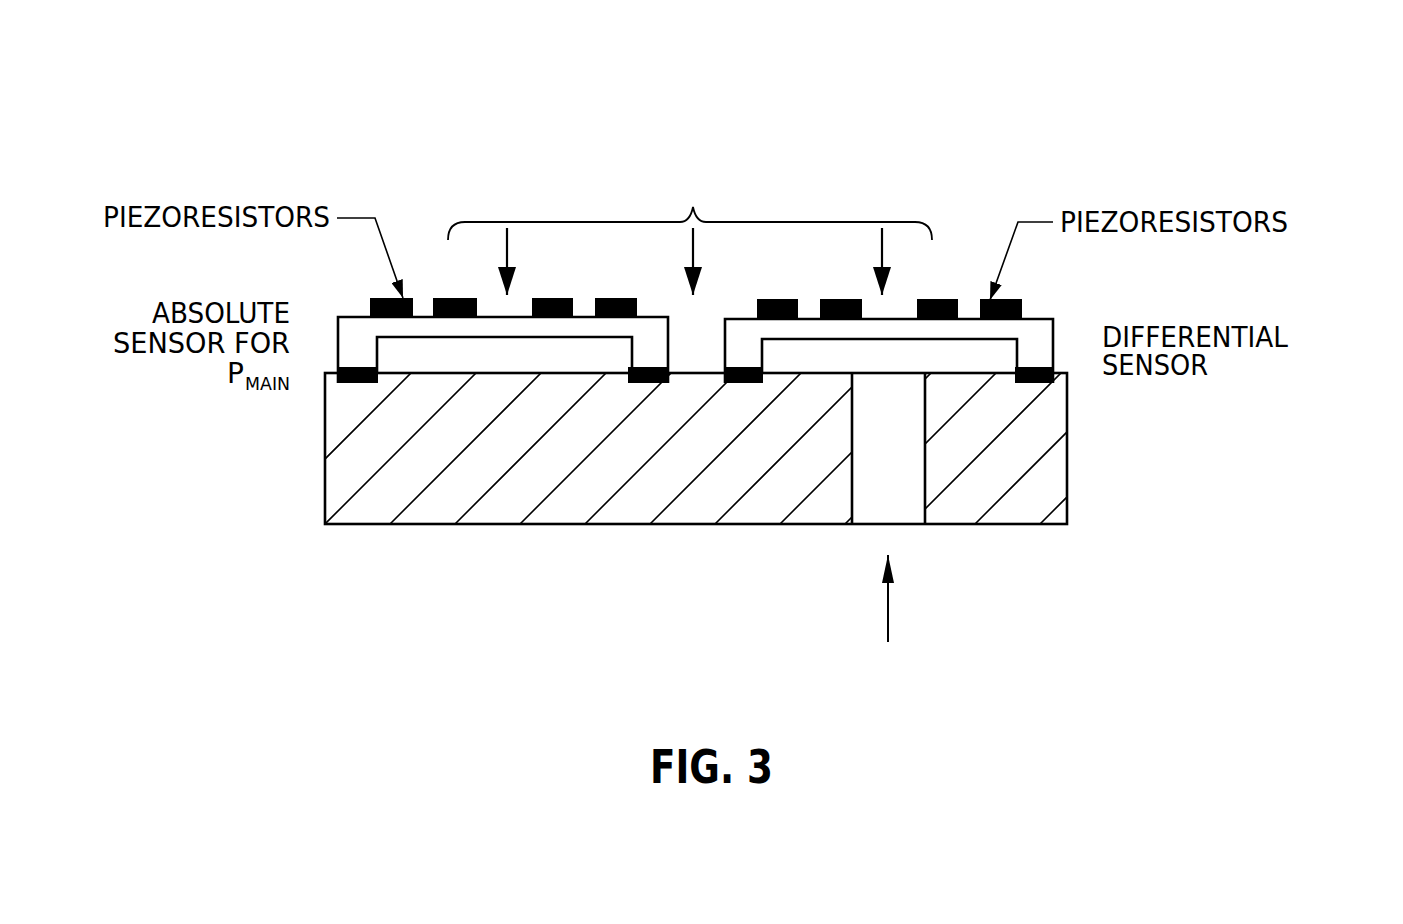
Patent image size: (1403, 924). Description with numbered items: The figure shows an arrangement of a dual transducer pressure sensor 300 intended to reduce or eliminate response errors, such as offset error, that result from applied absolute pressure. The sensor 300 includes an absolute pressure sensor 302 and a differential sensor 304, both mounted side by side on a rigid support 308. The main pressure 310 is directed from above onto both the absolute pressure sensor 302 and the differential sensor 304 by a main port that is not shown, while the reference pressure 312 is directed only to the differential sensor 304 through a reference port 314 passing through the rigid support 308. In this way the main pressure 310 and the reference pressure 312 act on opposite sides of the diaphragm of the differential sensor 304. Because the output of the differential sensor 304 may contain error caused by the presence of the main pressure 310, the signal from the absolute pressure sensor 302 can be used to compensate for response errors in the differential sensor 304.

The dual transducer pressure sensor 300 is at (682, 92).
The absolute pressure sensor 302 is at (309, 376).
The differential sensor 304 is at (1093, 382).
The rigid support 308 is at (1177, 512).
The main pressure 310 is at (752, 222).
The reference pressure 312 is at (885, 627).
The reference port 314 is at (898, 503).